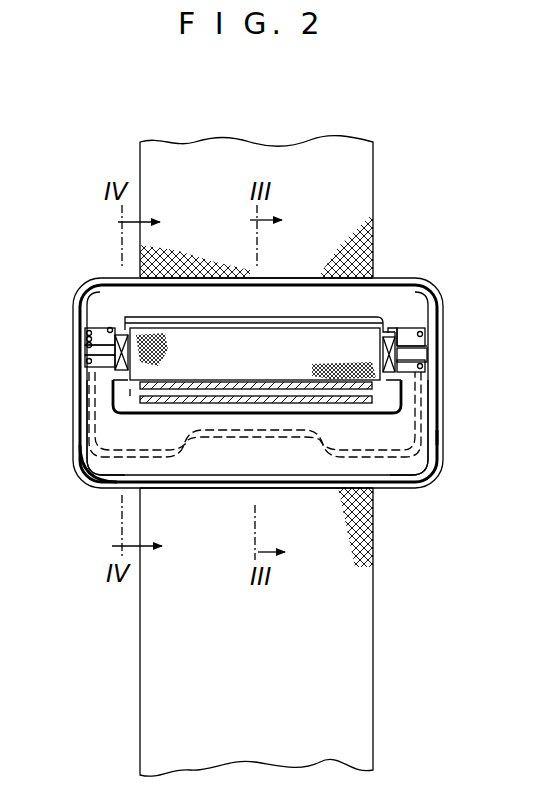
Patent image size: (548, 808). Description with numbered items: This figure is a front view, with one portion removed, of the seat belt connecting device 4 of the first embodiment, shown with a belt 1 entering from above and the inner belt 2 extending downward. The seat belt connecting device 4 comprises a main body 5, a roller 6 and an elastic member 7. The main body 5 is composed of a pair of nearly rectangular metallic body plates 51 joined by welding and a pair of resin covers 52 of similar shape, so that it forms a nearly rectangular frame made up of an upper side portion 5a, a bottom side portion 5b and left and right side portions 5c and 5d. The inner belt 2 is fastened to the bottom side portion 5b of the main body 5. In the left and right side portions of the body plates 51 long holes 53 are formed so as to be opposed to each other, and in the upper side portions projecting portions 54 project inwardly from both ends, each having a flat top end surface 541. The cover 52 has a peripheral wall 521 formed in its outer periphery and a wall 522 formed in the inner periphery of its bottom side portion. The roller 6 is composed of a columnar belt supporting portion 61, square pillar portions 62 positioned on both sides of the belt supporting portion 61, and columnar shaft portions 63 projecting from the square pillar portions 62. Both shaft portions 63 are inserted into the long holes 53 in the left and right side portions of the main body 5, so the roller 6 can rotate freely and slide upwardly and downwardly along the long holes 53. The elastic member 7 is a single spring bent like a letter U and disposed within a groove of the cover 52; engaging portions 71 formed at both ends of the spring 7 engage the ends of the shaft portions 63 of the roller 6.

The first sheet 1 is at (375, 162).
The inner belt 2 is at (375, 707).
The seat belt connecting device 4 is at (389, 492).
The main body 5 is at (440, 469).
The upper side portion 5a is at (307, 274).
The bottom side portion 5b is at (237, 490).
The left side portion 5c is at (77, 399).
The right side portion 5d is at (445, 379).
The body plate 51 is at (444, 438).
The cover 52 is at (433, 315).
The peripheral wall 521 is at (116, 480).
The wall 522 is at (292, 406).
The long hole 53 is at (92, 315).
The projecting portion 54 is at (118, 332).
The top end surface 541 is at (91, 328).
The roller 6 is at (347, 327).
The belt supporting portion 61 is at (203, 337).
The square pillar portion 62 is at (110, 428).
The shaft portion 63 is at (86, 348).
The elastic member 7 is at (197, 436).
The engaging portion 71 is at (86, 360).